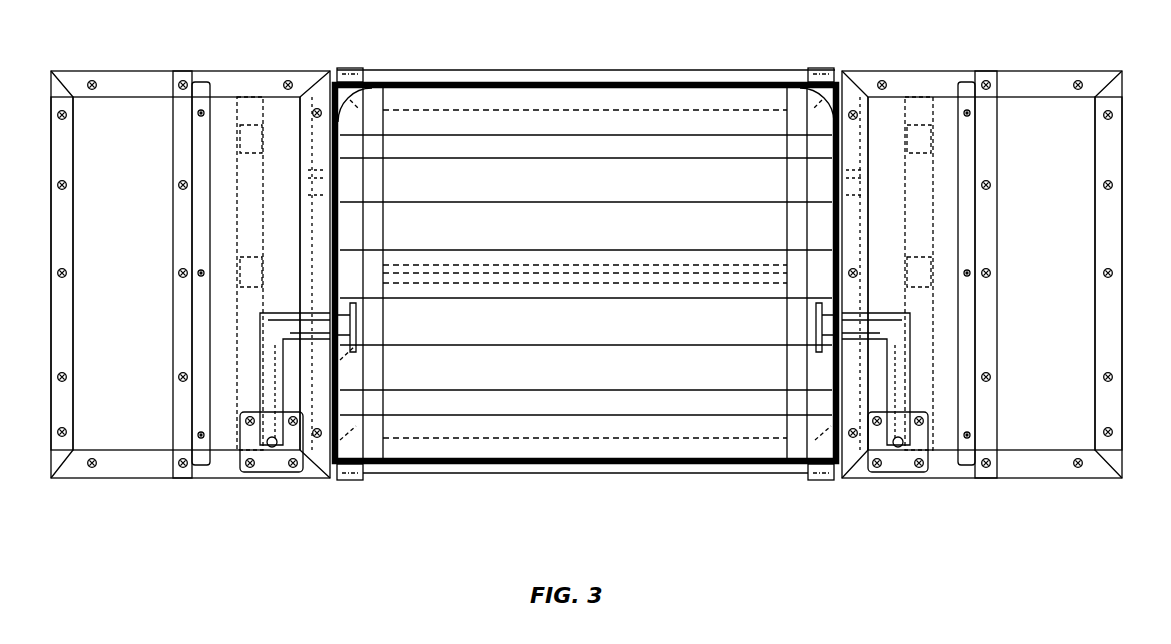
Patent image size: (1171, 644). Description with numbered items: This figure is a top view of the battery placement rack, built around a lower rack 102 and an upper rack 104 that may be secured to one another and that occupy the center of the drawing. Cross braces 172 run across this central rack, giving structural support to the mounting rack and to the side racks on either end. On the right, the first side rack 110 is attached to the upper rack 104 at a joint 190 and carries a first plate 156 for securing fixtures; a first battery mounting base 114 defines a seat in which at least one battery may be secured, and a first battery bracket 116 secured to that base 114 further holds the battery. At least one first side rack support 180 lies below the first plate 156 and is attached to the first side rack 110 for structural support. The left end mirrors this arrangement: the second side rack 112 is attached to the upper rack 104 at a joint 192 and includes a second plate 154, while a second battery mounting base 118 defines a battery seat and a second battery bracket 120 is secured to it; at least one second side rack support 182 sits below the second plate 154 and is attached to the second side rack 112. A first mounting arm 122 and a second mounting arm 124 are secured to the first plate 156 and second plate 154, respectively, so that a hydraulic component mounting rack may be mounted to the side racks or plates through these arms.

The lower rack 102 is at (760, 478).
The upper rack 104 is at (820, 478).
The first side rack 110 is at (1087, 478).
The second side rack 112 is at (62, 478).
The first battery mounting base 114 is at (1093, 93).
The first battery bracket 116 is at (967, 84).
The second battery mounting base 118 is at (73, 92).
The second battery bracket 120 is at (200, 82).
The first mounting arm 122 is at (907, 387).
The second mounting arm 124 is at (260, 387).
The second plate 154 is at (222, 342).
The first plate 156 is at (948, 107).
The cross braces 172 is at (537, 173).
The first side rack support 180 is at (903, 118).
The second side rack support 182 is at (276, 122).
The joint 190 is at (800, 88).
The joint 192 is at (372, 88).